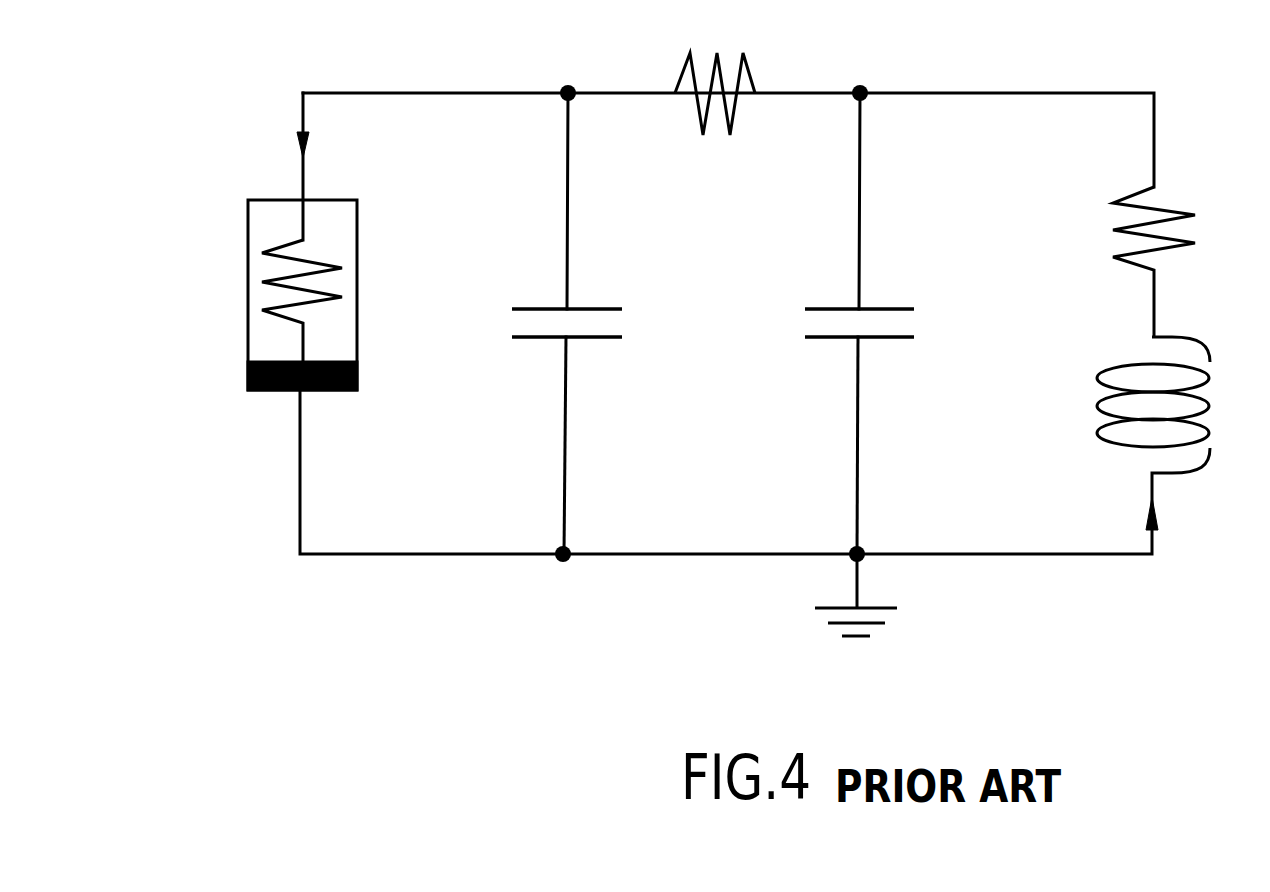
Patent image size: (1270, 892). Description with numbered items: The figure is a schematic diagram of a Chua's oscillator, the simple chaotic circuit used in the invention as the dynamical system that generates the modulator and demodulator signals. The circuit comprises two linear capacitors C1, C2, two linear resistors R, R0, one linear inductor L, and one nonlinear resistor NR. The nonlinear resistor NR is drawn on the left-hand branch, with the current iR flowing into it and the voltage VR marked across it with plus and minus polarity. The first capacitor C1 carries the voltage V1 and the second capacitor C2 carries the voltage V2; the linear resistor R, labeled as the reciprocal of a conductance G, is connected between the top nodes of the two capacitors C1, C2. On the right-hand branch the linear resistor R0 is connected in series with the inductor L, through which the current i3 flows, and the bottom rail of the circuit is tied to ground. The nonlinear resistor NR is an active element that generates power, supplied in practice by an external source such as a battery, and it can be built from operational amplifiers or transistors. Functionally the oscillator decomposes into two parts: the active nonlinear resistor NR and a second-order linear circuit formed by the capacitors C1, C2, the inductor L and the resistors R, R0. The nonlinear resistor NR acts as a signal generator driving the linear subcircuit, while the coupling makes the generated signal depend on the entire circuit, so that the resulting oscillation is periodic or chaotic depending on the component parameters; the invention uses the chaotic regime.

The nonlinear resistor current iR is at (276, 146).
The nonlinear resistor NR is at (283, 332).
The nonlinear resistor voltage VR is at (133, 255).
The first linear capacitor C1 is at (571, 353).
The first capacitor voltage V1 is at (464, 270).
The second linear capacitor C2 is at (863, 354).
The second capacitor voltage V2 is at (756, 270).
The linear resistor R is at (717, 74).
The linear resistor R0 is at (1184, 262).
The linear inductor L is at (1173, 433).
The inductor current i3 is at (1188, 507).